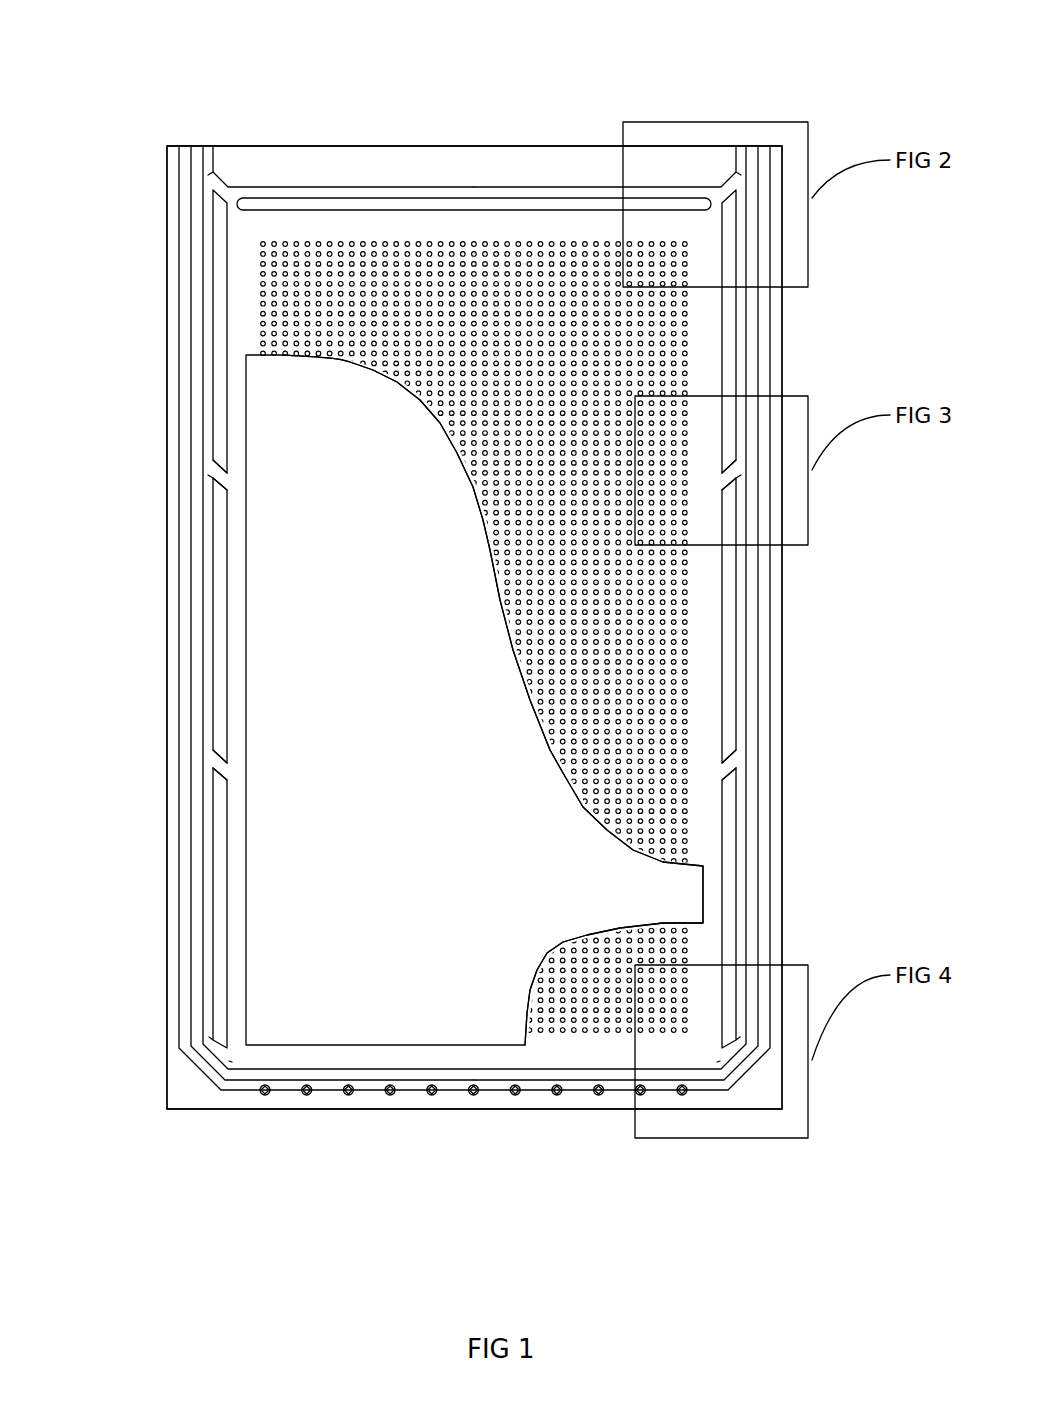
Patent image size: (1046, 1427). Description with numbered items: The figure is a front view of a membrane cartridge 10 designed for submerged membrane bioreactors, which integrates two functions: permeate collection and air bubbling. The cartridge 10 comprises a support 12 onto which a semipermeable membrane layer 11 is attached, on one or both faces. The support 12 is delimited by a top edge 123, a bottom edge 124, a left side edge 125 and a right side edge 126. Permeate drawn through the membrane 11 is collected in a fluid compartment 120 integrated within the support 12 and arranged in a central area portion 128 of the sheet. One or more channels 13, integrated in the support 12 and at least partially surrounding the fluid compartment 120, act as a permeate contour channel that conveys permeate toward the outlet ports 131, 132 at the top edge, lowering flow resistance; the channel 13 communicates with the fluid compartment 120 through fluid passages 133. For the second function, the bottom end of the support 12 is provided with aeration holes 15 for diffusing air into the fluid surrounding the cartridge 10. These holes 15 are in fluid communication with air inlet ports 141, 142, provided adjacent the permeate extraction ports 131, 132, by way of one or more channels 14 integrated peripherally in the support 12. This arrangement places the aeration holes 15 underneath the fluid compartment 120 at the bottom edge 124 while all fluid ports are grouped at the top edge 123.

The membrane cartridge 10 is at (378, 92).
The semipermeable membrane layer 11 is at (290, 635).
The support 12 is at (708, 850).
The channel 13 is at (210, 340).
The channel 14 is at (185, 280).
The holes 15 is at (475, 1094).
The fluid compartment 120 is at (297, 231).
The top edge 123 is at (440, 145).
The bottom edge 124 is at (308, 1110).
The left side edge 125 is at (166, 690).
The right side edge 126 is at (783, 640).
The central area portion 128 is at (658, 720).
The outlet port 131 is at (741, 155).
The outlet port 132 is at (209, 157).
The fluid passage 133 is at (733, 481).
The air inlet port 141 is at (764, 153).
The air inlet port 142 is at (185, 157).